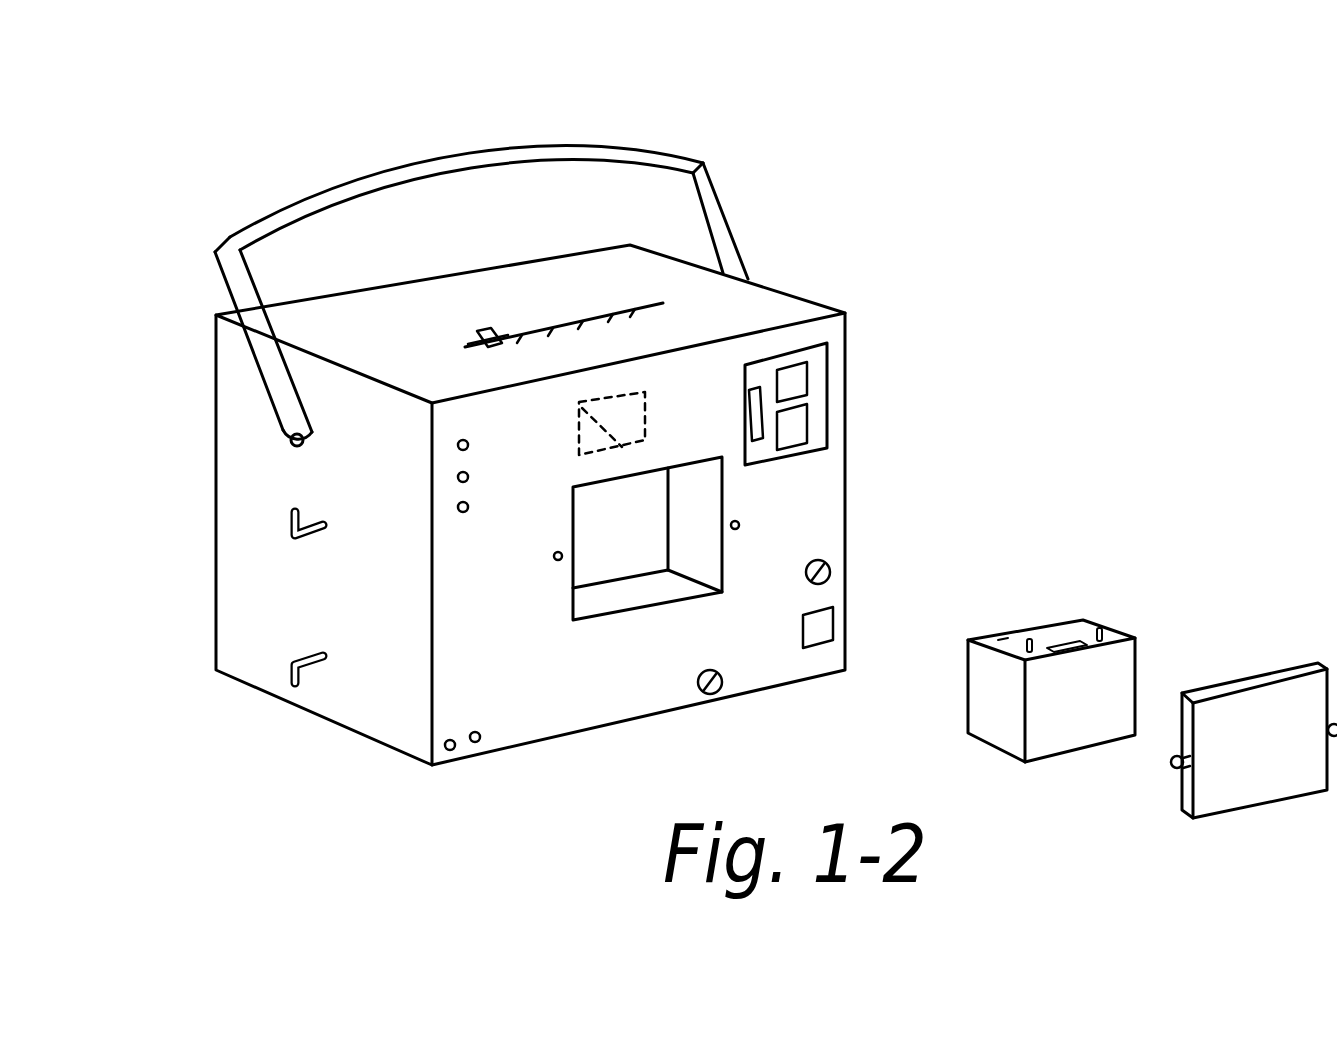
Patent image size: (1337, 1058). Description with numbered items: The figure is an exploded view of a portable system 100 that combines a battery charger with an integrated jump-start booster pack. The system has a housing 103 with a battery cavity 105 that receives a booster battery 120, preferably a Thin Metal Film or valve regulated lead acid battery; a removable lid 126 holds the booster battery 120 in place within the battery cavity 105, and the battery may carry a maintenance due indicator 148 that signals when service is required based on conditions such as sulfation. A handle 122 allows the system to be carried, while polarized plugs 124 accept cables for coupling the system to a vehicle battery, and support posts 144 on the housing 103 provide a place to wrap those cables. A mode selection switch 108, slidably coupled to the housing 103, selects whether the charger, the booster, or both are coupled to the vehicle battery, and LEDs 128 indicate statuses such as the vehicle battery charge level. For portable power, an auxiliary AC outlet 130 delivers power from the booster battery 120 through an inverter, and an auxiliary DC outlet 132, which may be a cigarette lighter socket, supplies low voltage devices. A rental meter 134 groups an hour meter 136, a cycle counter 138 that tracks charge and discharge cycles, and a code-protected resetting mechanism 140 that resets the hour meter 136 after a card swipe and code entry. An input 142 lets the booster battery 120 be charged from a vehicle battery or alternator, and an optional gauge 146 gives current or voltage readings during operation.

The portable system 100 is at (1100, 208).
The housing 103 is at (808, 664).
The battery cavity 105 is at (636, 572).
The mode selection switch 108 is at (538, 292).
The booster battery 120 is at (1088, 727).
The handle 122 is at (425, 157).
The polarized plugs 124 is at (474, 745).
The lid 126 is at (1250, 724).
The LEDs 128 is at (458, 508).
The auxiliary AC outlet 130 is at (830, 630).
The auxiliary DC outlet 132 is at (828, 562).
The rental meter 134 is at (860, 394).
The hour meter 136 is at (792, 380).
The cycle counter 138 is at (800, 428).
The code-protected resetting mechanism 140 is at (755, 393).
The input 142 is at (718, 694).
The support posts 144 is at (283, 672).
The current and/or voltage gauge 146 is at (620, 412).
The maintenance due indicator 148 is at (1062, 640).